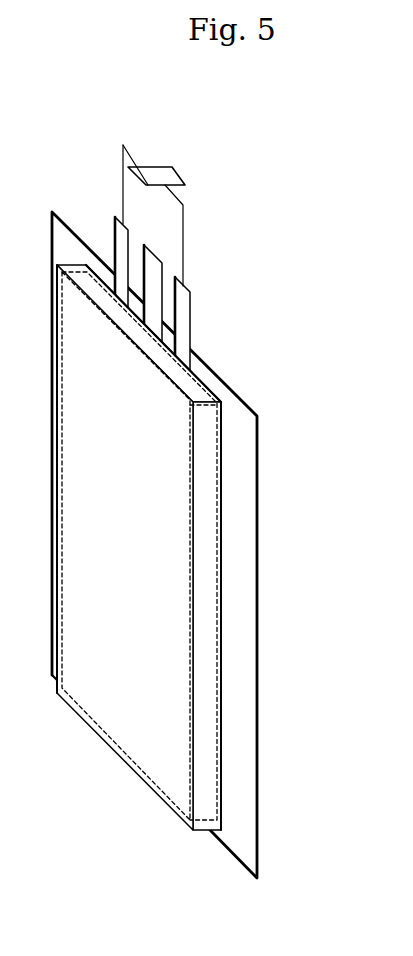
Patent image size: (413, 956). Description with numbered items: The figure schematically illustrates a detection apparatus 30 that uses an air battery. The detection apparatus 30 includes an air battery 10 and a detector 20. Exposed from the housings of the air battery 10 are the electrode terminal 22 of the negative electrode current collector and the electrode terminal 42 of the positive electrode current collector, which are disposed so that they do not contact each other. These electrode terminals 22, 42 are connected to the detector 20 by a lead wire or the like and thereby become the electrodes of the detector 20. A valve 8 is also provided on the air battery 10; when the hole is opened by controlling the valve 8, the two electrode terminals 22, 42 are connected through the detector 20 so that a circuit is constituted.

The detection apparatus 30 is at (320, 128).
The air battery 10 is at (237, 418).
The electrode terminal of the negative electrode current collector 22 is at (117, 238).
The valve 8 is at (152, 256).
The electrode terminal of the positive electrode current collector 42 is at (180, 292).
The detector 20 is at (170, 172).